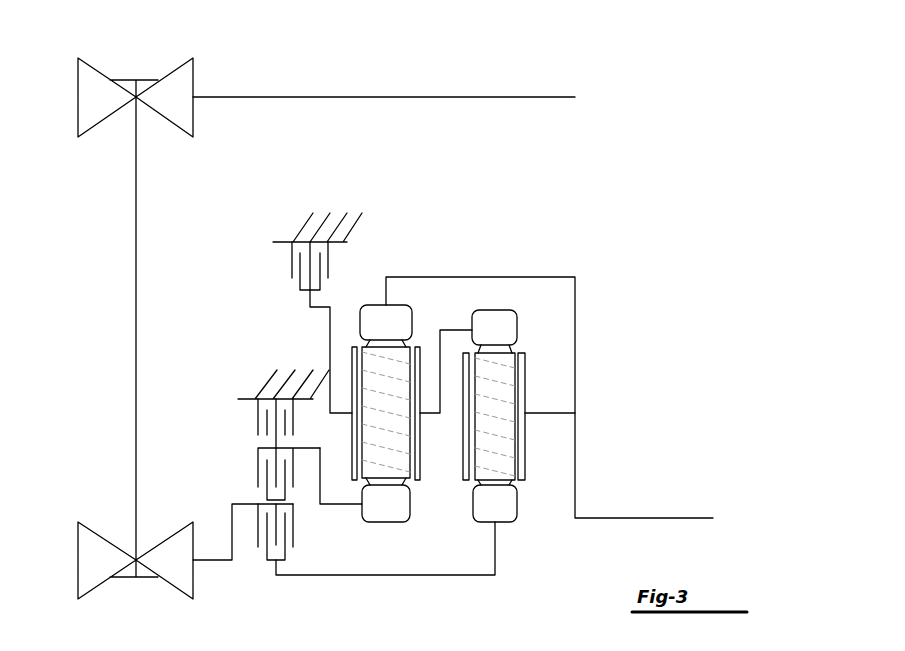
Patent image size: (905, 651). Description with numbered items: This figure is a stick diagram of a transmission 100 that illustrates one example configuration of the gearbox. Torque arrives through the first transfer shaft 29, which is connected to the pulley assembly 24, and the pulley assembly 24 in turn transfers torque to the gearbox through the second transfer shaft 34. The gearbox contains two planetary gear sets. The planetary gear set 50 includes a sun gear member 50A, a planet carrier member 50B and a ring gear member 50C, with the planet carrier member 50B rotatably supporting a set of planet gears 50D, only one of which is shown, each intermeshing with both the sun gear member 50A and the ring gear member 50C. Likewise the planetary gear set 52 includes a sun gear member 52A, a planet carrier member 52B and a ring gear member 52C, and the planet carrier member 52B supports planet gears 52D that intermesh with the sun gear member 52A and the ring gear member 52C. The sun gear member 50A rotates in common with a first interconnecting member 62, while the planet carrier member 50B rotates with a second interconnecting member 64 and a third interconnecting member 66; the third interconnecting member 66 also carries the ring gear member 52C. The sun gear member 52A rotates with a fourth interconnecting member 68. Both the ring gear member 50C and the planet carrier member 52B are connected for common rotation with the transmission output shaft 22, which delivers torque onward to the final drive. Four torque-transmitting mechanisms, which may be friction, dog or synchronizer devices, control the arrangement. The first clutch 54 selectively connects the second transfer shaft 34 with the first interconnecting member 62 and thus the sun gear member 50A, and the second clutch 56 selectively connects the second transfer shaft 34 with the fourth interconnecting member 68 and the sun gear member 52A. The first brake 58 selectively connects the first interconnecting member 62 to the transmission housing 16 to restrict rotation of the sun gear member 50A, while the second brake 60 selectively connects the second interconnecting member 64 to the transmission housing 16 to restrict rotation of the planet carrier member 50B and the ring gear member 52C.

The transmission 100 is at (630, 120).
The pulley assembly 24 is at (117, 60).
The first transfer shaft 29 is at (313, 90).
The second transfer shaft 34 is at (212, 560).
The transmission housing 16 is at (348, 228).
The second brake 60 is at (292, 258).
The second shaft or interconnecting member 64 is at (331, 320).
The first brake 58 is at (258, 412).
The first clutch 54 is at (258, 466).
The first shaft or interconnecting member 62 is at (310, 452).
The second clutch 56 is at (294, 540).
The fourth shaft or interconnecting member 68 is at (432, 575).
The planetary gear set 50 is at (532, 460).
The sun gear member 50A is at (398, 514).
The planet carrier member 50B is at (420, 420).
The ring gear member 50C is at (398, 334).
The planet gears 50D is at (410, 483).
The planetary gear set 52 is at (497, 466).
The sun gear member 52A is at (507, 514).
The planet carrier member 52B is at (527, 360).
The ring gear member 52C is at (507, 338).
The planet gears 52D is at (518, 482).
The third shaft or interconnecting member 66 is at (440, 348).
The transmission output shaft 22 is at (645, 518).